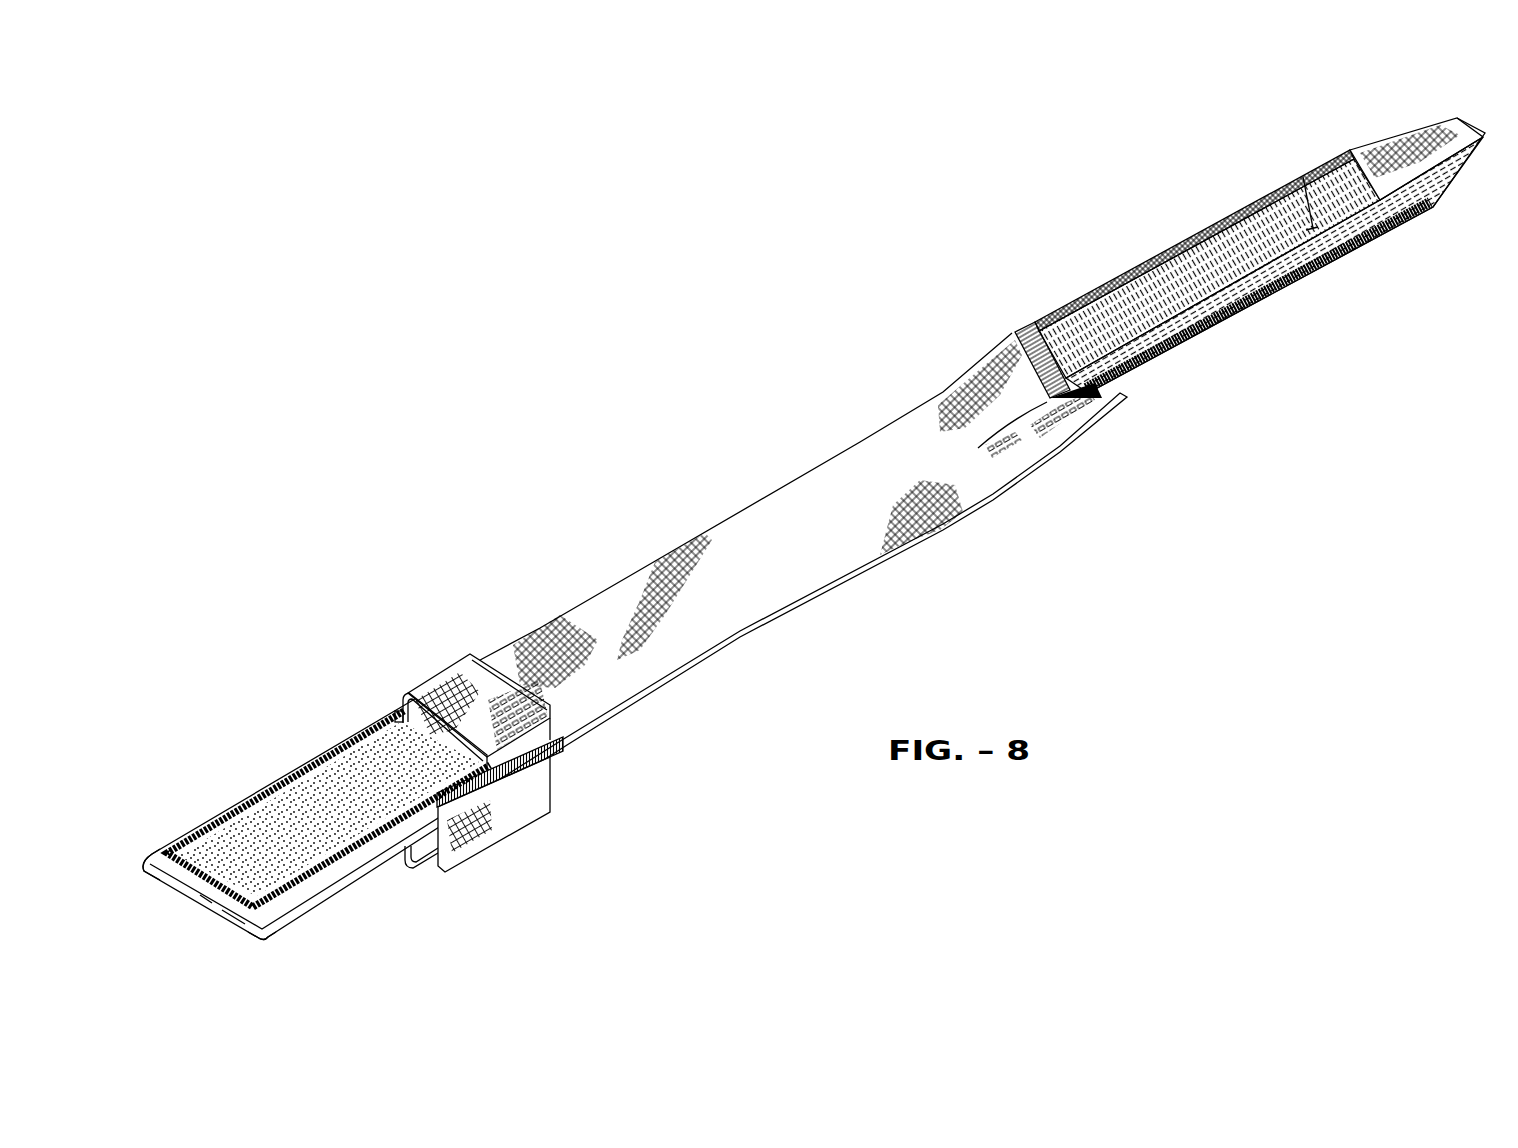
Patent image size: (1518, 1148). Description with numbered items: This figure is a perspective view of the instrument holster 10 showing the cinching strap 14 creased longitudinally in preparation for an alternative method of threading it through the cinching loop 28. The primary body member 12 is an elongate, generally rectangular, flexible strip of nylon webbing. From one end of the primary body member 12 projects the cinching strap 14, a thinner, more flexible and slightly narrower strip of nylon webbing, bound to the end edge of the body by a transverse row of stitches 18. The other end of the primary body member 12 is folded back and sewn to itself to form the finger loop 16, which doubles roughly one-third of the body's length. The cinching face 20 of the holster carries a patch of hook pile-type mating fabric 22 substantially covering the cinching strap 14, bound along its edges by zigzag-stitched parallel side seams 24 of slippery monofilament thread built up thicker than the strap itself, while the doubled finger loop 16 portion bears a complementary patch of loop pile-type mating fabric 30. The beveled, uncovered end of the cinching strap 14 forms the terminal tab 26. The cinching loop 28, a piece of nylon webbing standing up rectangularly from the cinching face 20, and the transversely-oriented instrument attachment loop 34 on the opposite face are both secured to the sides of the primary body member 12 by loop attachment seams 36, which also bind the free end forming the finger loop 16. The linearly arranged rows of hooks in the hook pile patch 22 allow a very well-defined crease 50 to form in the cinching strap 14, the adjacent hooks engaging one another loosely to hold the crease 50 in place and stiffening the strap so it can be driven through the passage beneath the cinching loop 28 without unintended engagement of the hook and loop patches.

The instrument holster 10 is at (814, 518).
The primary body member 12 is at (940, 542).
The cinching strap 14 is at (1208, 224).
The finger loop 16 is at (270, 932).
The stitches 18 is at (1012, 333).
The cinching face 20 is at (856, 495).
The hook pile-type mating fabric 22 is at (1203, 332).
The side seams 24 is at (1122, 284).
The terminal tab 26 is at (1417, 143).
The cinching loop 28 is at (460, 670).
The loop pile-type mating fabric 30 is at (258, 833).
The instrument attachment loop 34 is at (470, 836).
The loop attachment seams 36 is at (395, 712).
The crease 50 is at (1300, 183).